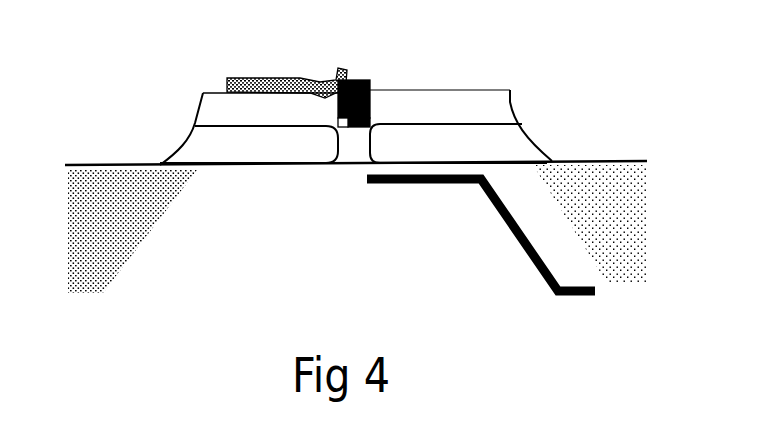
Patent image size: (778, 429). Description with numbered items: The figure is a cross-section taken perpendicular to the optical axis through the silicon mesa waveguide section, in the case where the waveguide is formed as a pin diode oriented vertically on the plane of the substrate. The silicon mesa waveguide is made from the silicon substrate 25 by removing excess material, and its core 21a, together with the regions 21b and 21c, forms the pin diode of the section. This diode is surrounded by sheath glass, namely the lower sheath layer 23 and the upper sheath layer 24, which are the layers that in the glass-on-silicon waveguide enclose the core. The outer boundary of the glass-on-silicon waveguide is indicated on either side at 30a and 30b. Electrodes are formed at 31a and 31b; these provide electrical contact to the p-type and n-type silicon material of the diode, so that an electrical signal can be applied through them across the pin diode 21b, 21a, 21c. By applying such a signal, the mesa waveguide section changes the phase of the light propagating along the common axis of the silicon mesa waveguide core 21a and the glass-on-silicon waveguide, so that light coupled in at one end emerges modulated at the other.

The lower sheath layer 23 is at (215, 150).
The boundary of the glass-on-silicon waveguide 30a is at (195, 123).
The electrode 31a is at (252, 78).
The pin diode region 21b is at (350, 78).
The core of the integrated silicon mesa waveguide 21a is at (350, 125).
The upper sheath layer 24 is at (445, 110).
The boundary of the glass-on-silicon waveguide 30b is at (528, 133).
The pin diode region 21c is at (345, 163).
The electrode 31b is at (463, 183).
The silicon substrate 25 is at (592, 233).